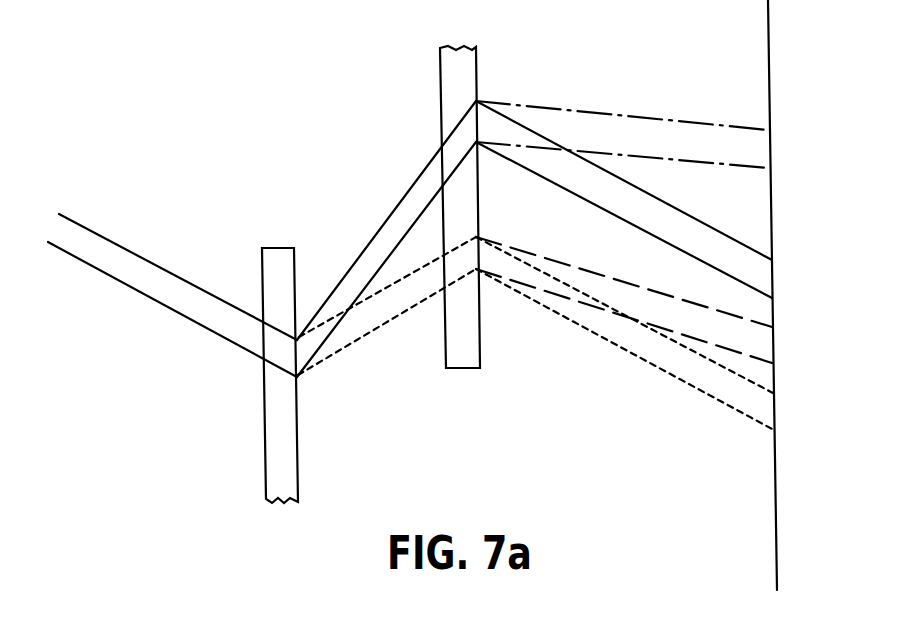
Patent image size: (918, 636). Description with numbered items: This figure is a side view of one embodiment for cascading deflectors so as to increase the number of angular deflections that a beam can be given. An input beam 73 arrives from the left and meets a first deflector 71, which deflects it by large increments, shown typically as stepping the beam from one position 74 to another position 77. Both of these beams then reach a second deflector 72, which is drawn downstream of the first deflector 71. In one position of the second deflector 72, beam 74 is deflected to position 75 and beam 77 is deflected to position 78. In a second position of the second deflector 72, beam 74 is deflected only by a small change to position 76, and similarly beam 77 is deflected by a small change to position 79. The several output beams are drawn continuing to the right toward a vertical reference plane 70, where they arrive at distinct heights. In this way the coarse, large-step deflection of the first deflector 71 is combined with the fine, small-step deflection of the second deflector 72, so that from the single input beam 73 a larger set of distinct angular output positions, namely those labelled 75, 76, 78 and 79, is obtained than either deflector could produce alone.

The image plane 70 is at (778, 507).
The first deflector 71 is at (281, 247).
The second deflector 72 is at (466, 372).
The input beam 73 is at (95, 234).
The deflected beam position 74 is at (374, 332).
The deflected beam position 75 is at (637, 357).
The deflected beam position 76 is at (758, 322).
The deflected beam position 77 is at (379, 228).
The deflected beam position 78 is at (727, 236).
The deflected beam position 79 is at (627, 115).